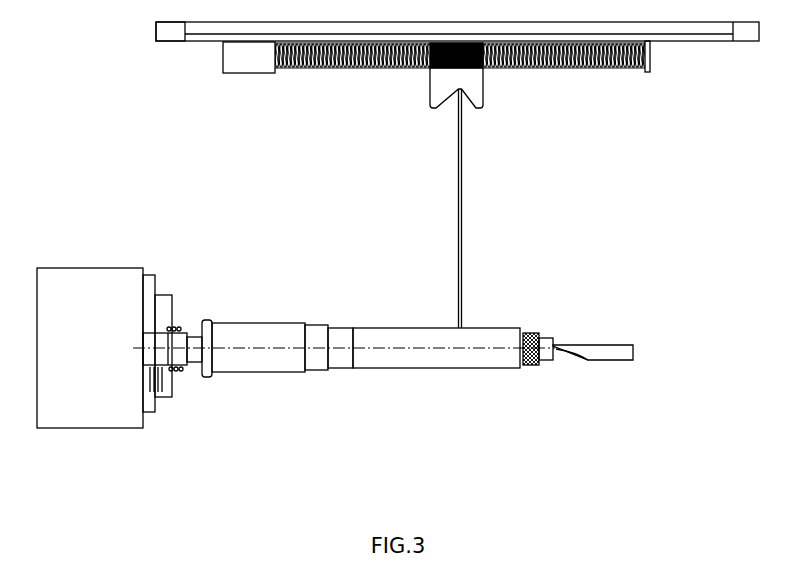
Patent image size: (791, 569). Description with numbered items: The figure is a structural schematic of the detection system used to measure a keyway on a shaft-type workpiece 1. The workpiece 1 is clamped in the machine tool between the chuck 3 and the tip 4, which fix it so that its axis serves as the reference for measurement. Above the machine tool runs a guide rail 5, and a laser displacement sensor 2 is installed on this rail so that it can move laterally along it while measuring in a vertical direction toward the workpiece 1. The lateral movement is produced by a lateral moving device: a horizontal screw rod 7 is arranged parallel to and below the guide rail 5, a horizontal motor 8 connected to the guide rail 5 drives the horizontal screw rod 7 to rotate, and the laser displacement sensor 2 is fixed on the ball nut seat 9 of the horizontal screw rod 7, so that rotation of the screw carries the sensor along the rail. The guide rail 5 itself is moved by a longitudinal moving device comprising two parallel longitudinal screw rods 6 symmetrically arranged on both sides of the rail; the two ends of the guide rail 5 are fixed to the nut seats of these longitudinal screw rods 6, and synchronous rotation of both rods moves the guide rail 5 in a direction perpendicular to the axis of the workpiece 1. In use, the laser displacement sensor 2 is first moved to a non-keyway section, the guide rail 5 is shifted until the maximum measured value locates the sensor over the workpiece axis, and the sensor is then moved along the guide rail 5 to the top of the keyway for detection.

The workpiece 1 is at (468, 355).
The laser displacement sensor 2 is at (452, 79).
The chuck 3 is at (165, 318).
The tip 4 is at (603, 352).
The guide rail 5 is at (680, 31).
The longitudinal screw rods 6 is at (165, 28).
The horizontal screw rod 7 is at (583, 68).
The horizontal motor 8 is at (250, 62).
The ball nut seat 9 is at (485, 72).